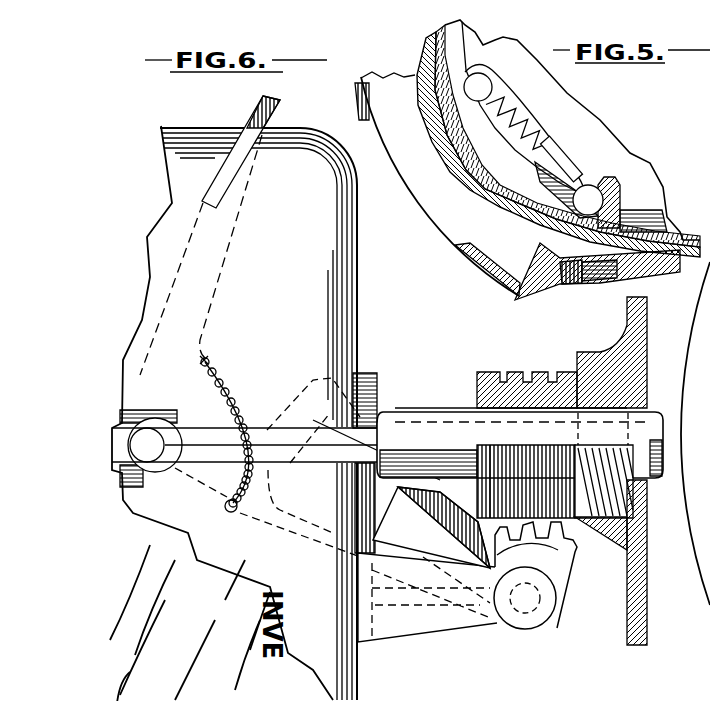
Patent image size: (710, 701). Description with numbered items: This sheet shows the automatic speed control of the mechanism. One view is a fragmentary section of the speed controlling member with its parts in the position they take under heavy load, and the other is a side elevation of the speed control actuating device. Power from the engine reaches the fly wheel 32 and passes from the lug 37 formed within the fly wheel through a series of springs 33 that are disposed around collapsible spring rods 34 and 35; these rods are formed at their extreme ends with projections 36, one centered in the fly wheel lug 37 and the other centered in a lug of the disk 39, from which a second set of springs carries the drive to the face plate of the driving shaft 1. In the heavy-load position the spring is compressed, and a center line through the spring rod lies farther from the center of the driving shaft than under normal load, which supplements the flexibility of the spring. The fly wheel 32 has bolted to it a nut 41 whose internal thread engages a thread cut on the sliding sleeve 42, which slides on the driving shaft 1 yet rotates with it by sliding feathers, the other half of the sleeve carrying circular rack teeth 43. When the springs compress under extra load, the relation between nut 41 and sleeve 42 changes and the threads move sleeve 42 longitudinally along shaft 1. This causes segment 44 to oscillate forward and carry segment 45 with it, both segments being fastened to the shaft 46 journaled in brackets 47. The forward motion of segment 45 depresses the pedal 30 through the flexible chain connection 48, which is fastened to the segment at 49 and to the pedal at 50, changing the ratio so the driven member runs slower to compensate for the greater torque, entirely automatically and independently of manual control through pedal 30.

In FIG. 6, the driving shaft 1 is at (412, 428).
In FIG. 6, the pedal 30 is at (263, 108).
In FIG. 5, the fly wheel 32 is at (420, 213).
In FIG. 5, the springs 33 is at (510, 110).
In FIG. 5, the collapsible spring rod 34 is at (577, 186).
In FIG. 5, the collapsible spring rod 35 is at (553, 147).
In FIG. 5, the projections 36 is at (637, 186).
In FIG. 5, the lug 37 is at (490, 67).
In FIG. 5, the disk 39 is at (460, 125).
In FIG. 5, the nut 41 is at (415, 168).
In FIG. 6, the nut 41 is at (613, 355).
In FIG. 6, the sliding sleeve 42 is at (633, 510).
In FIG. 6, the circular rack teeth 43 is at (510, 373).
In FIG. 6, the segment 44 is at (570, 558).
In FIG. 6, the segment 45 is at (275, 527).
In FIG. 6, the shaft 46 is at (523, 605).
In FIG. 6, the brackets 47 is at (423, 625).
In FIG. 6, the flexible chain connection 48 is at (230, 388).
In FIG. 6, the chain fastening on segment 49 is at (226, 507).
In FIG. 6, the chain fastening on pedal 50 is at (208, 360).